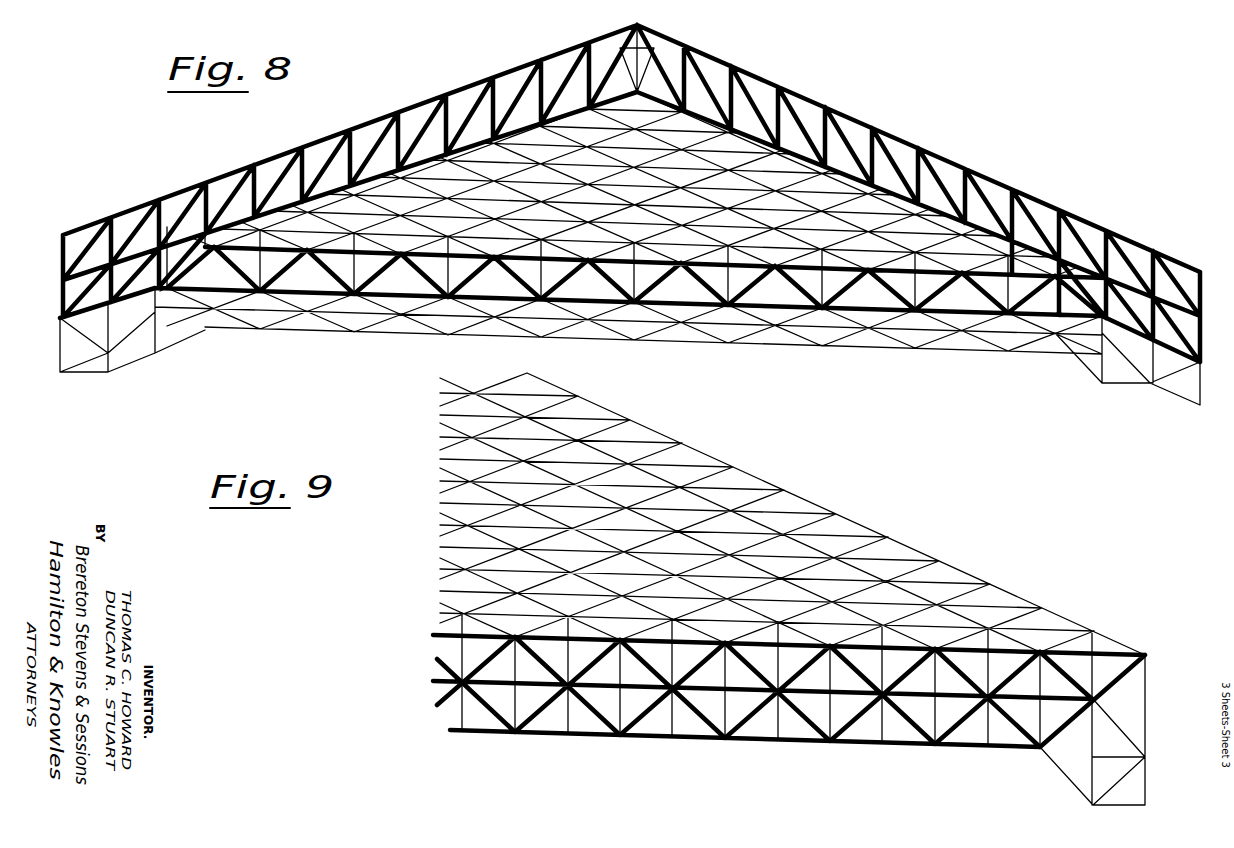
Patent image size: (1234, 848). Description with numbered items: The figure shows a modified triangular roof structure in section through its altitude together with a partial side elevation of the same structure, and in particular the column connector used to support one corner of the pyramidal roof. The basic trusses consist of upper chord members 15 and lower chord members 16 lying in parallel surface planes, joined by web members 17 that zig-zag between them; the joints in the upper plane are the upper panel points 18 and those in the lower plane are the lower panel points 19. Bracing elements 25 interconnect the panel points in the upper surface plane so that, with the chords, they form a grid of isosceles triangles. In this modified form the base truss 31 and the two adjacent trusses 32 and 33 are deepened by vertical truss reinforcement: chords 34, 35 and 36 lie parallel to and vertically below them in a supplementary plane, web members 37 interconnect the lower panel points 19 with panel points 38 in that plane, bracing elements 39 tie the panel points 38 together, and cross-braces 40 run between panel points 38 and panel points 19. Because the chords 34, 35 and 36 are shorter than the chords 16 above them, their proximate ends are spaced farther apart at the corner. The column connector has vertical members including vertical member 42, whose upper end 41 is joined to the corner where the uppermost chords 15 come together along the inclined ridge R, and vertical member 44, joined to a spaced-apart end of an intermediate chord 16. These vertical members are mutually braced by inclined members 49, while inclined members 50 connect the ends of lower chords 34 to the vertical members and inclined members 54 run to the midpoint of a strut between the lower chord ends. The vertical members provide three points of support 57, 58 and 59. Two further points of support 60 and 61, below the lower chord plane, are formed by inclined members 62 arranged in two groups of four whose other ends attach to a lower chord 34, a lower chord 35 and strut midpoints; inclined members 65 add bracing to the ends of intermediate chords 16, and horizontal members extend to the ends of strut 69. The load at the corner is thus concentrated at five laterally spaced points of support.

In FIG. 9, the upper chord members 15 is at (1120, 650).
In FIG. 8, the lower chord members 16 is at (925, 280).
In FIG. 9, the lower chord members 16 is at (954, 686).
In FIG. 8, the web members 17 is at (951, 295).
In FIG. 9, the web members 17 is at (1007, 675).
In FIG. 9, the upper panel points 18 is at (964, 616).
In FIG. 8, the lower panel points 19 is at (932, 253).
In FIG. 9, the lower panel points 19 is at (970, 698).
In FIG. 9, the bracing elements 25 is at (956, 563).
In FIG. 8, the base truss 31 is at (1203, 283).
In FIG. 8, the adjacent truss 32 is at (1162, 268).
In FIG. 8, the adjacent truss 33 is at (1120, 250).
In FIG. 8, the chord 34 is at (912, 300).
In FIG. 9, the chord 34 is at (958, 763).
In FIG. 8, the chord 35 is at (912, 342).
In FIG. 8, the chord 36 is at (902, 368).
In FIG. 8, the web members 37 is at (1207, 341).
In FIG. 9, the web members 37 is at (968, 720).
In FIG. 8, the panel points 38 is at (903, 334).
In FIG. 9, the panel points 38 is at (876, 762).
In FIG. 8, the bracing elements 39 is at (1014, 346).
In FIG. 8, the cross-braces 40 is at (994, 300).
In FIG. 9, the cross-braces 40 is at (950, 687).
In FIG. 9, the upper end 41 is at (1147, 655).
In FIG. 9, the vertical member 42 is at (1147, 706).
In FIG. 8, the vertical member 44 is at (1201, 379).
In FIG. 9, the vertical member 44 is at (1113, 755).
In FIG. 8, the inclined members 49 is at (1183, 380).
In FIG. 9, the inclined members 49 is at (1125, 749).
In FIG. 9, the inclined members 50 is at (1073, 757).
In FIG. 8, the inclined members 54 is at (1140, 363).
In FIG. 8, the point of support 57 is at (1127, 408).
In FIG. 8, the point of support 58 is at (1201, 406).
In FIG. 9, the point of support 58 is at (1093, 805).
In FIG. 9, the point of support 59 is at (1146, 805).
In FIG. 8, the point of support 60 is at (1158, 420).
In FIG. 9, the point of support 60 is at (1030, 793).
In FIG. 8, the point of support 61 is at (1097, 408).
In FIG. 8, the inclined members 62 is at (1082, 376).
In FIG. 9, the inclined members 62 is at (1009, 772).
In FIG. 8, the inclined members 65 is at (1118, 370).
In FIG. 8, the strut 69 is at (1088, 325).
In FIG. 9, the inclined ridge R is at (872, 522).